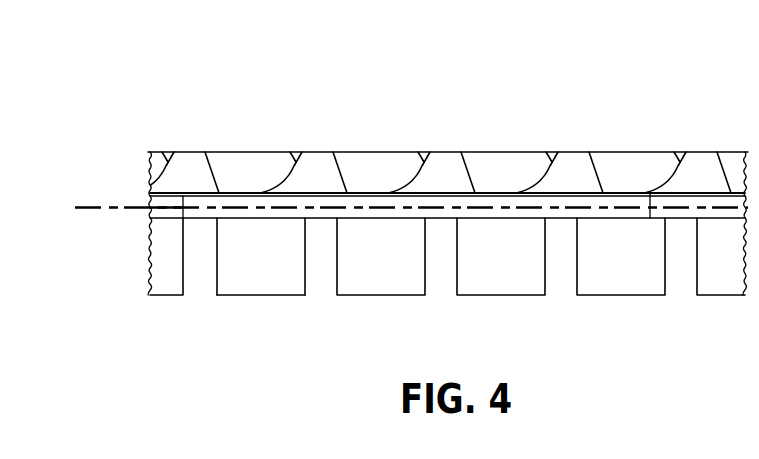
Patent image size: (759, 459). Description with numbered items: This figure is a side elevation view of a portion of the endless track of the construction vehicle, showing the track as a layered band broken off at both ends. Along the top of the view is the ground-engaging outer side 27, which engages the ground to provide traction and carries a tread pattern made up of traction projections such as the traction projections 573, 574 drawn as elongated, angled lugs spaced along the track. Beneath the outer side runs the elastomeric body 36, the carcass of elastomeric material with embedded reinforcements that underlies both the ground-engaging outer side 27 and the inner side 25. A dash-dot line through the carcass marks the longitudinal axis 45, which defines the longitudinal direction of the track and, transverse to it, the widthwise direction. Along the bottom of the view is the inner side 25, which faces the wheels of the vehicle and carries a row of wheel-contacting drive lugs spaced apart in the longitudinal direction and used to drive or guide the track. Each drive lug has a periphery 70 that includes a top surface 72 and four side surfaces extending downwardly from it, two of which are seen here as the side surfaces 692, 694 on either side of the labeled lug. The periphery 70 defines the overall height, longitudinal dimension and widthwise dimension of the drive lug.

The ground-engaging outer side 27 is at (440, 119).
The traction projection 573 is at (374, 172).
The traction projection 574 is at (453, 144).
The longitudinal axis 45 is at (100, 201).
The elastomeric body 36 is at (136, 214).
The inner side 25 is at (447, 303).
The periphery 70 is at (262, 303).
The side surface 692 is at (217, 262).
The side surface 694 is at (305, 262).
The top surface 72 is at (245, 296).